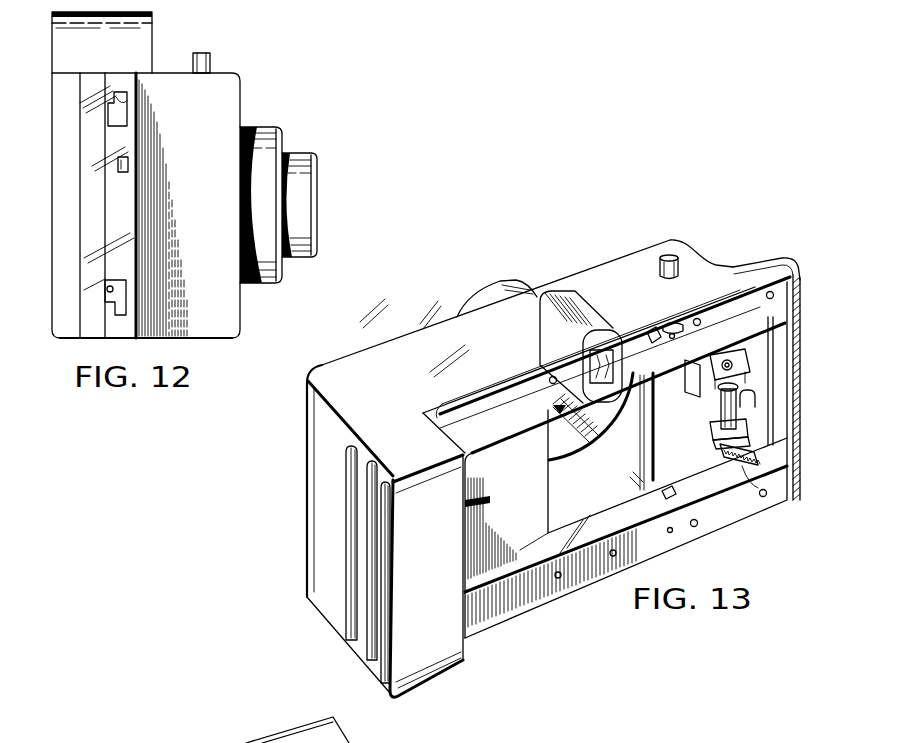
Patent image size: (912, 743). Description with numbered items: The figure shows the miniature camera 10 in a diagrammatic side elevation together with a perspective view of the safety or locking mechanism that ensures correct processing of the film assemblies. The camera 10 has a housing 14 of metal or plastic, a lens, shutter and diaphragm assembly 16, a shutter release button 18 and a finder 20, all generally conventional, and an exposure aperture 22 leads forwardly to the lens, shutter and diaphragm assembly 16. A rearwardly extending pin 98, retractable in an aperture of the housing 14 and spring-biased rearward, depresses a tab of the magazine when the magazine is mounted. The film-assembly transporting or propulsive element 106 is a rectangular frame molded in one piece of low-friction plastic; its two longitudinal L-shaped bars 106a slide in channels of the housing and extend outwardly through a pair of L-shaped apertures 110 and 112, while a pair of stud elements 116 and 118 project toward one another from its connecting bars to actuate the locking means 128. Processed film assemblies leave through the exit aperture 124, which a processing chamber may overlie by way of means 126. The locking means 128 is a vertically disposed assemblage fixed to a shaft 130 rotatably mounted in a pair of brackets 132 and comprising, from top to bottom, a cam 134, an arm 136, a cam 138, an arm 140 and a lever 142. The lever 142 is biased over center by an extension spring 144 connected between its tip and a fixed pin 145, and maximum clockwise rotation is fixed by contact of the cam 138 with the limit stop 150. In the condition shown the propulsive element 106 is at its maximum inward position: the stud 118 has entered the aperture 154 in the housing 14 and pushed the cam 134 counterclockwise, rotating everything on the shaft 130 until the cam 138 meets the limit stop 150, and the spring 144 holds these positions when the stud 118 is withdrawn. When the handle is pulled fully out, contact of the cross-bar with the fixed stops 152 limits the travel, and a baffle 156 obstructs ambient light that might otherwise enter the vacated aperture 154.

In FIG. 12, the miniature camera 10 is at (250, 300).
In FIG. 13, the miniature camera 10 is at (704, 541).
In FIG. 13, the housing 14 is at (402, 348).
In FIG. 12, the lens, shutter and diaphragm assembly 16 is at (318, 162).
In FIG. 13, the lens, shutter and diaphragm assembly 16 is at (510, 280).
In FIG. 12, the shutter release button 18 is at (208, 62).
In FIG. 13, the shutter release button 18 is at (676, 255).
In FIG. 13, the finder 20 is at (582, 313).
In FIG. 13, the exposure aperture 22 is at (578, 477).
In FIG. 13, the pin 98 is at (653, 322).
In FIG. 13, the propulsive element 106 is at (647, 537).
In FIG. 13, the longitudinal L-shaped bars 106a is at (598, 553).
In FIG. 12, the L-shaped aperture 110 is at (127, 102).
In FIG. 12, the L-shaped aperture 112 is at (107, 287).
In FIG. 13, the stud element 116 is at (487, 497).
In FIG. 13, the stud element 118 is at (735, 350).
In FIG. 13, the exit aperture 124 is at (374, 640).
In FIG. 13, the means 126 is at (378, 580).
In FIG. 13, the propulsive-element locking means 128 is at (777, 407).
In FIG. 13, the shaft 130 is at (790, 263).
In FIG. 13, the brackets 132 is at (741, 368).
In FIG. 13, the cam 134 is at (747, 353).
In FIG. 13, the arm 136 is at (738, 383).
In FIG. 13, the cam 138 is at (718, 416).
In FIG. 13, the arm 140 is at (728, 437).
In FIG. 13, the lever 142 is at (742, 470).
In FIG. 13, the extension spring 144 is at (754, 455).
In FIG. 13, the fixed pin 145 is at (750, 433).
In FIG. 13, the limit stop 150 is at (748, 394).
In FIG. 13, the fixed stops 152 is at (728, 360).
In FIG. 12, the aperture 154 is at (128, 163).
In FIG. 13, the baffle 156 is at (698, 383).